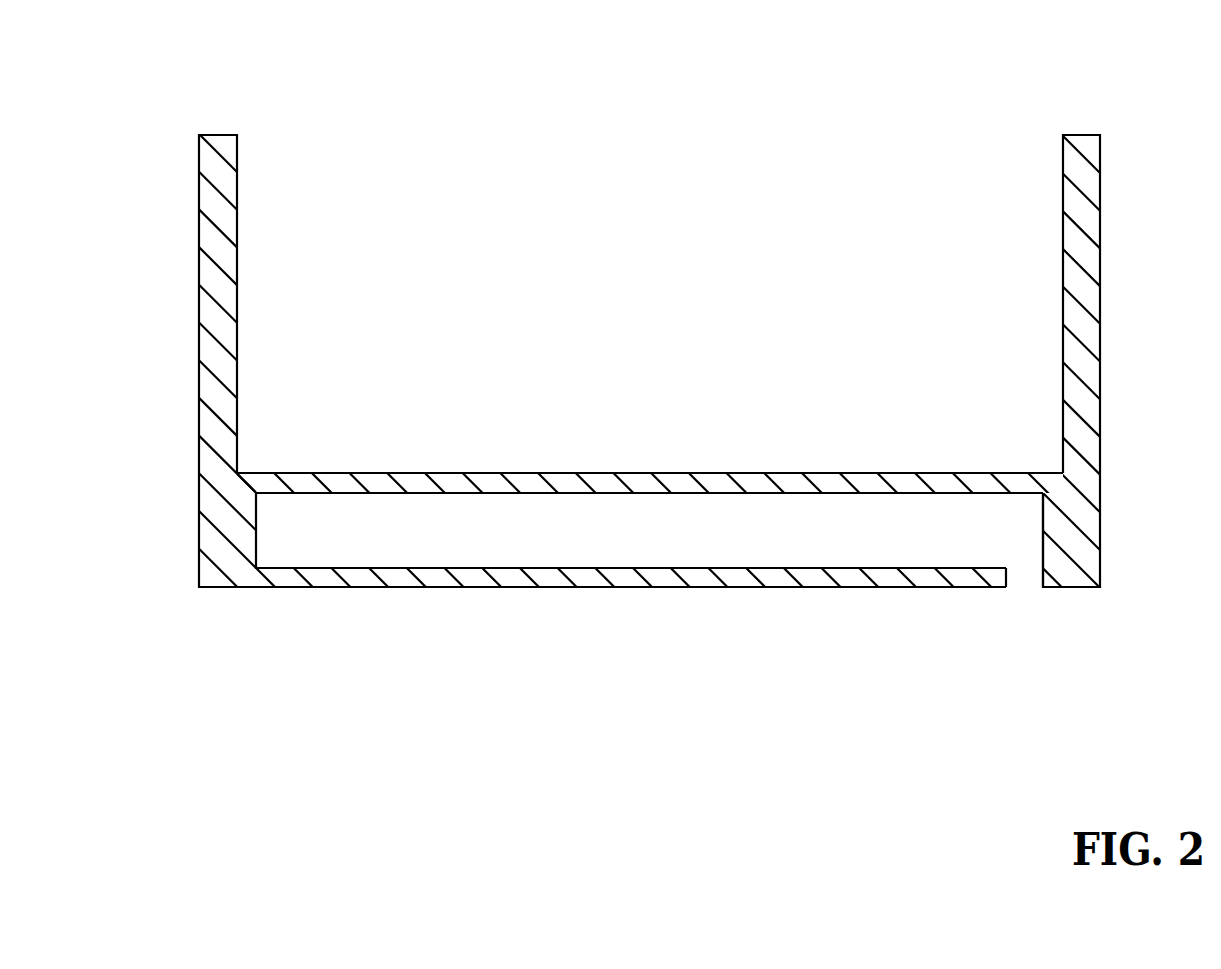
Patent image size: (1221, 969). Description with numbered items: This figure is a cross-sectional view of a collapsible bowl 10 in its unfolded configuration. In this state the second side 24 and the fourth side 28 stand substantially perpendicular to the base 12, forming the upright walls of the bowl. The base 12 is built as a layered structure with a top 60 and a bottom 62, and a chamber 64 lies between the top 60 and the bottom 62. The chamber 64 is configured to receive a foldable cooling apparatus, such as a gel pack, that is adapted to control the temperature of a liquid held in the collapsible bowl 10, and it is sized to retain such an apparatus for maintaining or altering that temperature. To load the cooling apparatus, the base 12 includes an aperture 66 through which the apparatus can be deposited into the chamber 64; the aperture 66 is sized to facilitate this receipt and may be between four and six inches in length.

The collapsible bowl 10 is at (300, 90).
The base 12 is at (620, 430).
The second side 24 is at (199, 228).
The fourth side 28 is at (1062, 190).
The top 60 is at (452, 473).
The bottom 62 is at (432, 587).
The chamber 64 is at (649, 530).
The aperture 66 is at (1006, 603).